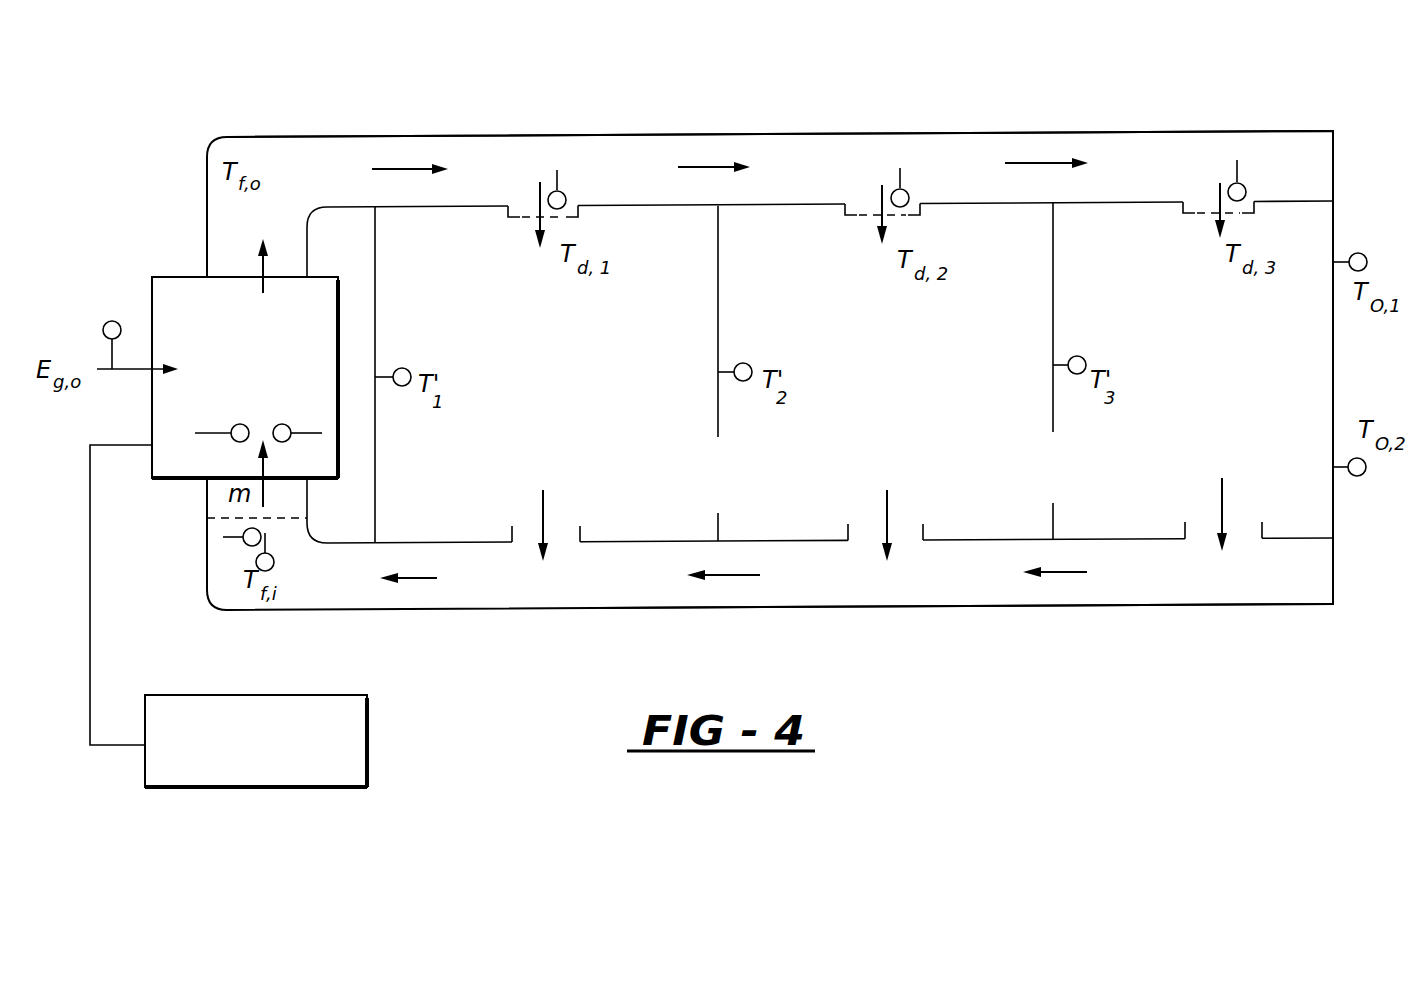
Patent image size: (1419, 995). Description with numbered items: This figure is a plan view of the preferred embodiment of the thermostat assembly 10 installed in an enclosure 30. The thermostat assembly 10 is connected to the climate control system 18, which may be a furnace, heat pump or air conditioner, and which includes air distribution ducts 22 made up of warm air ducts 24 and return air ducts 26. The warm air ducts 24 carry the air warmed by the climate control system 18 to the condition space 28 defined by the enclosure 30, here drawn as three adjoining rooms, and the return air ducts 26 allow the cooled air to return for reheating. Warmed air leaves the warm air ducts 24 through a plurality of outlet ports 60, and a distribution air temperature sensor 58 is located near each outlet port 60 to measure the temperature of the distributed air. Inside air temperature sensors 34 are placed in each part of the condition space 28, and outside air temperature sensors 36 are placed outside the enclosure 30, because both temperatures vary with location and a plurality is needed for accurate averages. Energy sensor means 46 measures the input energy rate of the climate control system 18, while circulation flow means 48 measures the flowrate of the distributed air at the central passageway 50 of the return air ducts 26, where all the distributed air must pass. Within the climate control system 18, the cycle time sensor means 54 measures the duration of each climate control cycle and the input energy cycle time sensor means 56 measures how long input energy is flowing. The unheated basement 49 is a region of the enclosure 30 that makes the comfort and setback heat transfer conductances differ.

The thermostat assembly 10 is at (367, 757).
The climate control system 18 is at (177, 277).
The air distribution ducts 22 is at (1010, 128).
The warm air ducts 24 is at (1112, 125).
The return air ducts 26 is at (1182, 604).
The condition space 28 is at (590, 383).
The enclosure 30 is at (443, 136).
The inside air temperature sensors 34 is at (400, 368).
The outside air temperature sensors 36 is at (1364, 252).
The energy sensor means 46 is at (106, 322).
The circulation flow means 48 is at (230, 540).
The unheated basement 49 is at (362, 528).
The central passageway 50 is at (232, 518).
The cycle time sensor means 54 is at (233, 427).
The input energy cycle time sensor means 56 is at (285, 427).
The distribution air temperature sensors 58 is at (565, 195).
The outlet ports 60 is at (530, 218).